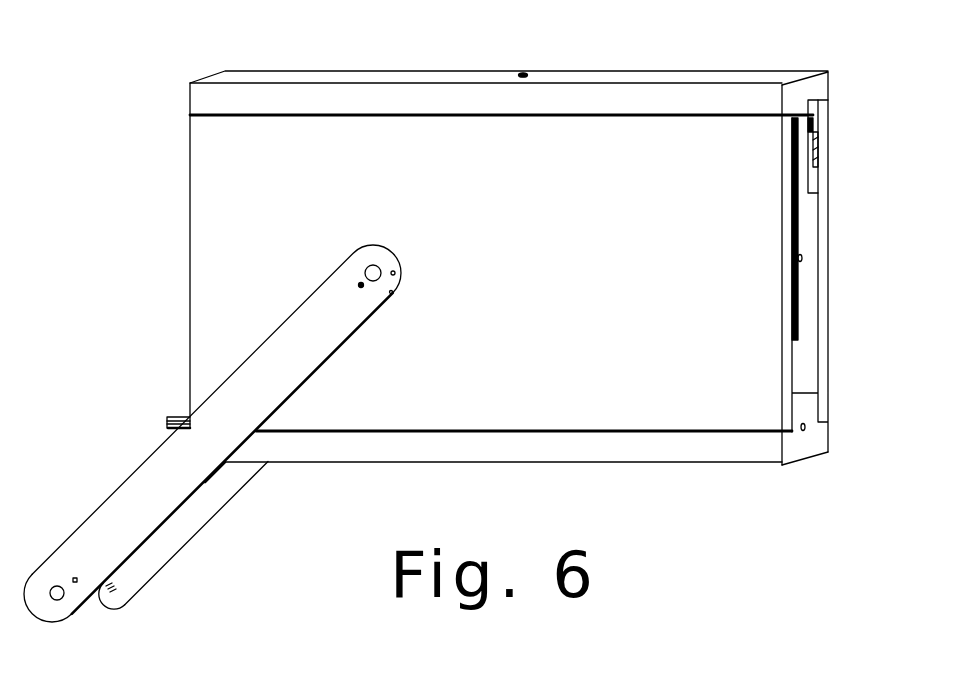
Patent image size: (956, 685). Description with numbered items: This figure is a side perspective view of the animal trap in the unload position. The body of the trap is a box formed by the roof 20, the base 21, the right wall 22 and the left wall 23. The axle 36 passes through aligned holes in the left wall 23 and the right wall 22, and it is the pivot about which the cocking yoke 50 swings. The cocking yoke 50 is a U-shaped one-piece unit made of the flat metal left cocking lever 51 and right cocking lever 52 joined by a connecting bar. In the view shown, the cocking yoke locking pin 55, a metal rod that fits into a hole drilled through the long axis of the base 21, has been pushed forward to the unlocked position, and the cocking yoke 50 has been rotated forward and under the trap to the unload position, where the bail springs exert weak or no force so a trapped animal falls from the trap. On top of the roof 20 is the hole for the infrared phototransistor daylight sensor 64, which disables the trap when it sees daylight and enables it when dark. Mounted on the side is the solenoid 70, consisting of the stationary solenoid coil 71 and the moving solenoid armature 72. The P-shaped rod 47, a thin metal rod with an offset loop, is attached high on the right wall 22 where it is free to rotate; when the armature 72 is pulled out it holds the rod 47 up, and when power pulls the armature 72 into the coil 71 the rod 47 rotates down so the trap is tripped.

The roof 20 is at (470, 72).
The base 21 is at (427, 443).
The right wall 22 is at (450, 145).
The left wall 23 is at (823, 333).
The axle 36 is at (362, 274).
The P-shaped rod 47 is at (800, 222).
The cocking yoke 50 is at (220, 423).
The left cocking lever 51 is at (195, 517).
The right cocking lever 52 is at (193, 457).
The cocking yoke locking pin 55 is at (167, 422).
The infrared phototransistor daylight sensor 64 is at (565, 52).
The solenoid 70 is at (803, 170).
The solenoid coil 71 is at (818, 113).
The solenoid armature 72 is at (817, 150).